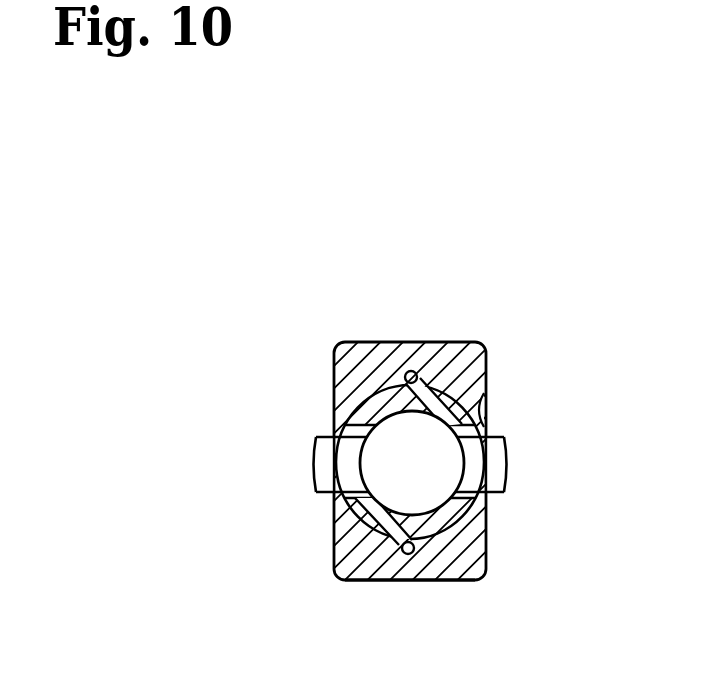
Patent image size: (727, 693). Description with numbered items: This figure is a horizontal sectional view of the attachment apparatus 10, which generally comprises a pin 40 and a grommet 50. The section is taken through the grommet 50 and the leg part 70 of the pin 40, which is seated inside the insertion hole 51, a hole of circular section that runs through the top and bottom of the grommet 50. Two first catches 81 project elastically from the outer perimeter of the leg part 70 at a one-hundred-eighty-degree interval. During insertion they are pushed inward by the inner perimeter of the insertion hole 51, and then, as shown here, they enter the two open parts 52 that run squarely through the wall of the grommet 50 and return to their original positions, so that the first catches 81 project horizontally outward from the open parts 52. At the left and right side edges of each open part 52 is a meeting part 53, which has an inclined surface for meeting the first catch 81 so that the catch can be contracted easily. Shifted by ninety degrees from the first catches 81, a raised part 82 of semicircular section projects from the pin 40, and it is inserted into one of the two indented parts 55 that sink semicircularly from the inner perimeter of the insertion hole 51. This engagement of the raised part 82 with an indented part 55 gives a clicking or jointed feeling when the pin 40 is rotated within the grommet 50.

The attachment apparatus 10 is at (267, 216).
The pin 40 is at (363, 465).
The grommet 50 is at (350, 345).
The insertion hole 51 is at (348, 590).
The open part 52 is at (338, 428).
The meeting part 53 is at (340, 512).
The indented part 55 is at (421, 375).
The leg part 70 is at (463, 540).
The first catch 81 is at (320, 463).
The raised part 82 is at (409, 372).